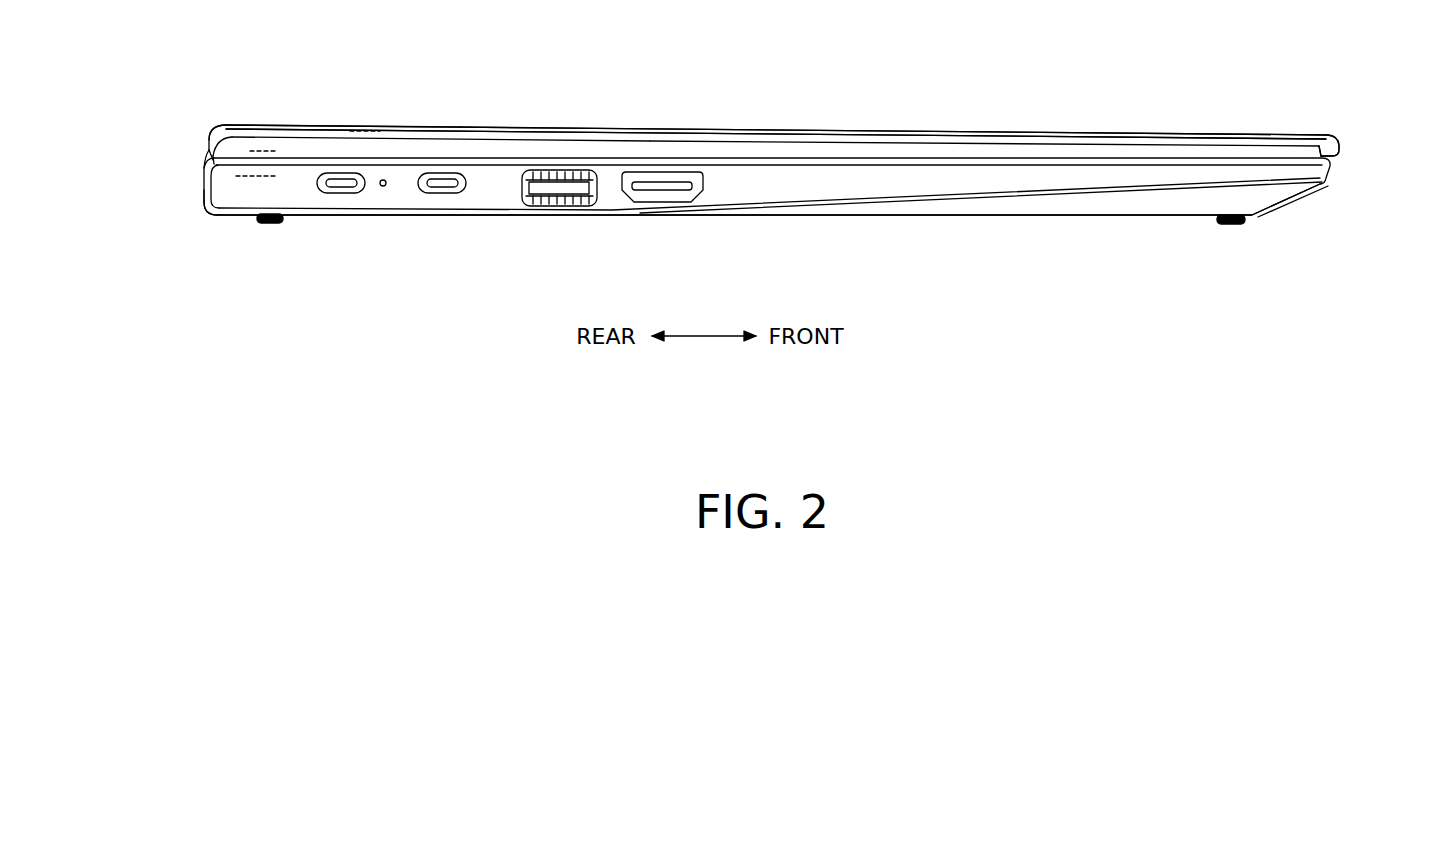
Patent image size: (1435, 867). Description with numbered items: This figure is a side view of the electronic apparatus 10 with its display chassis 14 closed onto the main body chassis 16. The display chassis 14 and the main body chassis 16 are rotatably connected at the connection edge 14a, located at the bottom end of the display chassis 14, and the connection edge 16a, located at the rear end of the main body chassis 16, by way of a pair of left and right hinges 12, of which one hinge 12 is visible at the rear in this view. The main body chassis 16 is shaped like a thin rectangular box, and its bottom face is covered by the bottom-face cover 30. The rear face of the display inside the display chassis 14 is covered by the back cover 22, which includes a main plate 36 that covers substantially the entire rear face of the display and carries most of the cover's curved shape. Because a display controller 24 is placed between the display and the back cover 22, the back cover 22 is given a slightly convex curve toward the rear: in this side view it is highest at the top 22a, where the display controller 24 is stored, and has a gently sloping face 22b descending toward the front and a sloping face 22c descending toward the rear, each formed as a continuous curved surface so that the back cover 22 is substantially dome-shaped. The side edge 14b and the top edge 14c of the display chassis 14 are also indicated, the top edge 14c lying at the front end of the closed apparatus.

The electronic apparatus 10 is at (1068, 90).
The hinge 12 is at (213, 160).
The display chassis 14 is at (842, 142).
The connection edge 14a is at (207, 137).
The side edge 14b is at (725, 143).
The top edge 14c is at (1334, 145).
The main body chassis 16 is at (838, 192).
The connection edge 16a is at (205, 194).
The back cover 22 is at (523, 127).
The top 22a is at (387, 129).
The sloping face 22b is at (922, 128).
The sloping face 22c is at (297, 124).
The display controller 24 is at (362, 125).
The bottom-face cover 30 is at (1093, 208).
The main plate 36 is at (523, 127).